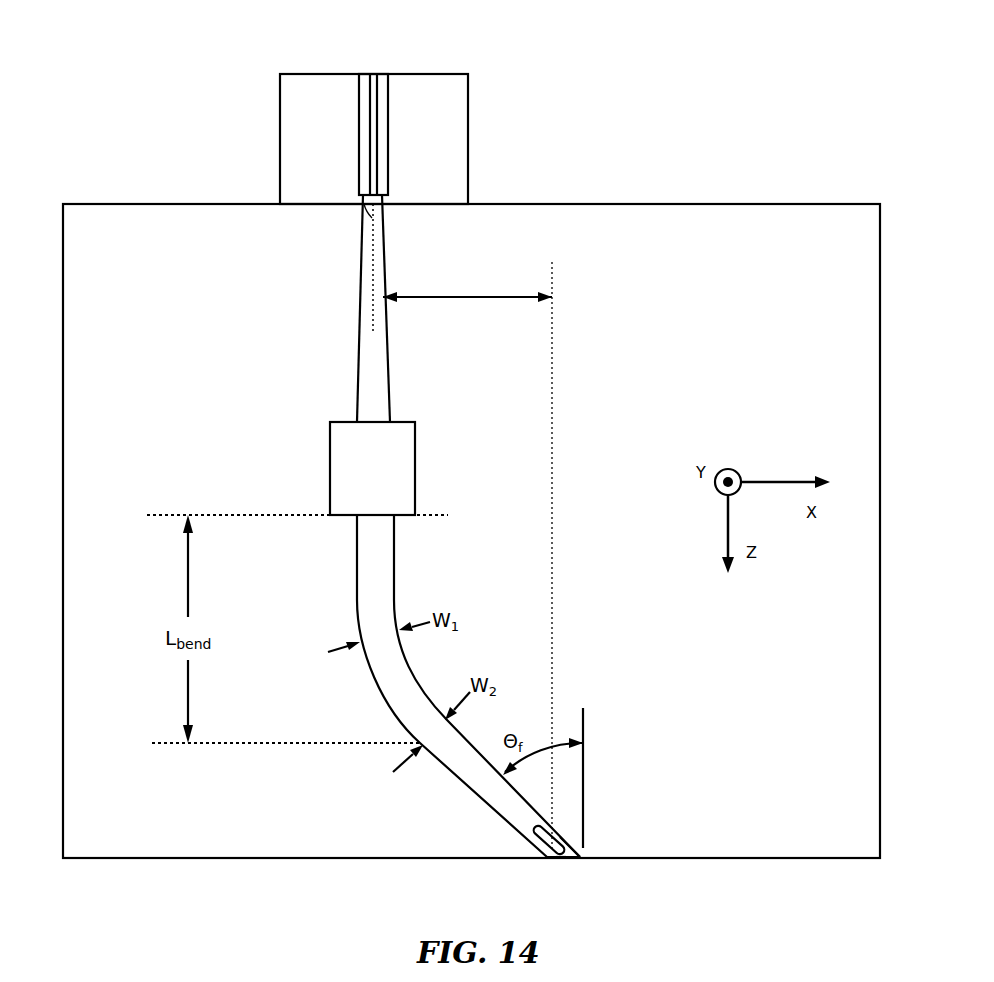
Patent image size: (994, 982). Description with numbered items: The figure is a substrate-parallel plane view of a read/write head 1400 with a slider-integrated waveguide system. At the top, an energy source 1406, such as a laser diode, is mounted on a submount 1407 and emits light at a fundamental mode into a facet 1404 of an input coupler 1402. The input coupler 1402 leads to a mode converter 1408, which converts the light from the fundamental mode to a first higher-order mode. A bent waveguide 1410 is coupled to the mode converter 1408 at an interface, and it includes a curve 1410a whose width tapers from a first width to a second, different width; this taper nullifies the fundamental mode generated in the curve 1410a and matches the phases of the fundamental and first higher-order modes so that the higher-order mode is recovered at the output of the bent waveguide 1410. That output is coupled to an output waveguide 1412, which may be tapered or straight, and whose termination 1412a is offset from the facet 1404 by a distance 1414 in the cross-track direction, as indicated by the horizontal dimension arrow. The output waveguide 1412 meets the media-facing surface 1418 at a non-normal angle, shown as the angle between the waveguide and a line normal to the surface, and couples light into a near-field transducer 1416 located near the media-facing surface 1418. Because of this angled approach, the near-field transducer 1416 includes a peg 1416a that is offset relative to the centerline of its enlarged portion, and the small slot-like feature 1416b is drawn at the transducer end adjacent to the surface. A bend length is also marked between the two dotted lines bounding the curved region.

The read/write head 1400 is at (85, 222).
The input coupler 1402 is at (365, 295).
The facet 1404 is at (371, 210).
The energy source 1406 is at (366, 82).
The submount 1407 is at (302, 73).
The mode converter 1408 is at (330, 456).
The bent waveguide 1410 is at (357, 575).
The curve 1410a is at (373, 670).
The output waveguide 1412 is at (207, 513).
The termination 1412a is at (548, 858).
The distance 1414 is at (465, 297).
The near-field transducer 1416 is at (575, 858).
The peg 1416a is at (560, 858).
The tip opening 1416b is at (535, 829).
The media-facing surface 1418 is at (768, 856).